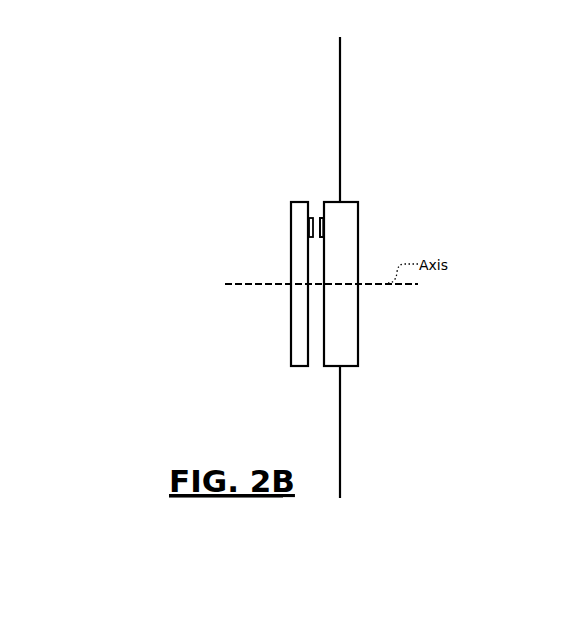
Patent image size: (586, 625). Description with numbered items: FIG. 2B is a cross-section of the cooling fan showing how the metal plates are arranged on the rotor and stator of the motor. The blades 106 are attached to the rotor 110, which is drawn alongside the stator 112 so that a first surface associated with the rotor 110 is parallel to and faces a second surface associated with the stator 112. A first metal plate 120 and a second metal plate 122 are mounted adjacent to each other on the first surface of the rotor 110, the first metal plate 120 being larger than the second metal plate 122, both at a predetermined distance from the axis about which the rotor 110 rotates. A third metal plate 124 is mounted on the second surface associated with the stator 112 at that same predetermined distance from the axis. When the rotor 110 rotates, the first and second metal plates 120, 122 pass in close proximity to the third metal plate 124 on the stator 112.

The blades 106 is at (341, 102).
The rotor 110 is at (358, 215).
The stator 112 is at (291, 349).
The first metal plate 120 is at (321, 218).
The second metal plate 122 is at (322, 227).
The third metal plate 124 is at (311, 218).